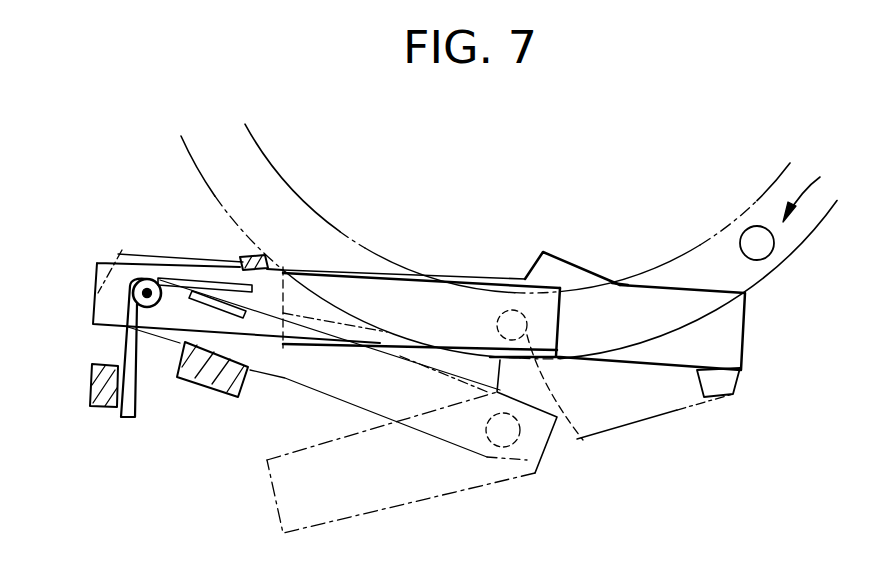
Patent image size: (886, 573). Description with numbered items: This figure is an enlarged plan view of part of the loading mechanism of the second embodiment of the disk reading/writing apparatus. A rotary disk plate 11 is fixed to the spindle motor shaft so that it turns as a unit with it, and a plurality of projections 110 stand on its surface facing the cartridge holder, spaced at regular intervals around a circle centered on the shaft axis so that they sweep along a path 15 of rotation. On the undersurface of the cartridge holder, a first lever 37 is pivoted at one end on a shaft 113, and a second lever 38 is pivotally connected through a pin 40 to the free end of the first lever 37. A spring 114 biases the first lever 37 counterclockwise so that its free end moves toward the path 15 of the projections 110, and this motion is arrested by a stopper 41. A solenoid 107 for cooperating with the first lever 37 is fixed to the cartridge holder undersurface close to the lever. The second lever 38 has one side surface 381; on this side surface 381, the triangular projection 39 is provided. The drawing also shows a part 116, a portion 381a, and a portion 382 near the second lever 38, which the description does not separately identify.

The rotary disk plate 11 is at (523, 178).
The path of rotation of the projections 15 is at (760, 209).
The first lever 37 is at (263, 338).
The second lever 38 is at (738, 314).
The triangular projection 39 is at (556, 268).
The pin 40 is at (520, 427).
The stopper 41 is at (243, 260).
The solenoid 107 is at (208, 378).
The projection 110 is at (762, 248).
The shaft 113 is at (140, 274).
The spring 114 is at (125, 334).
The stopper 116 is at (98, 392).
The side surface 381 is at (617, 283).
The blade plate 381a is at (430, 270).
The blade support 382 is at (700, 372).